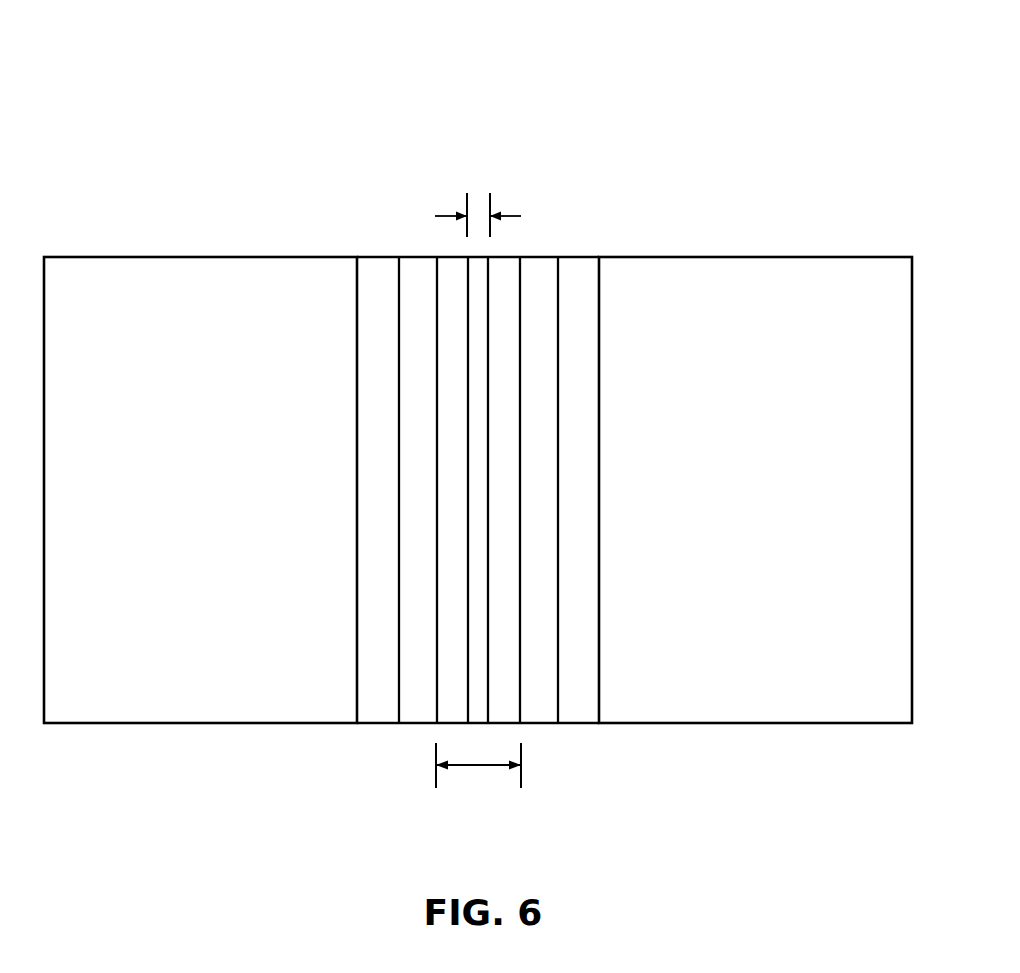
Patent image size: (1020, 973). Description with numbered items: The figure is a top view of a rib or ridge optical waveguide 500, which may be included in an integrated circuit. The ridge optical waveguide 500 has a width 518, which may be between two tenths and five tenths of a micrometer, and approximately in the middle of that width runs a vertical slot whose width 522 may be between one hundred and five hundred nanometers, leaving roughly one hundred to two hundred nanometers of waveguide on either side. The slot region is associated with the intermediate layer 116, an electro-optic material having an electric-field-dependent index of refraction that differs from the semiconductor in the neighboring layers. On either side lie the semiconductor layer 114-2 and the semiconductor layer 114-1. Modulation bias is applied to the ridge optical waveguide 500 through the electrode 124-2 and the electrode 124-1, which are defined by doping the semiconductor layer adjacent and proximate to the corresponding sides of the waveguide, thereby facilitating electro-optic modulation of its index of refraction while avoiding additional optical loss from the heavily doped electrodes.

The ridge optical waveguide 500 is at (521, 150).
The width of vertical slot 522 is at (478, 193).
The intermediate layer 116 is at (477, 385).
The semiconductor layer 114-2 is at (200, 490).
The semiconductor layer 114-1 is at (755, 490).
The electrode 124-2 is at (384, 637).
The electrode 124-1 is at (572, 636).
The width of ridge optical waveguide 518 is at (478, 768).